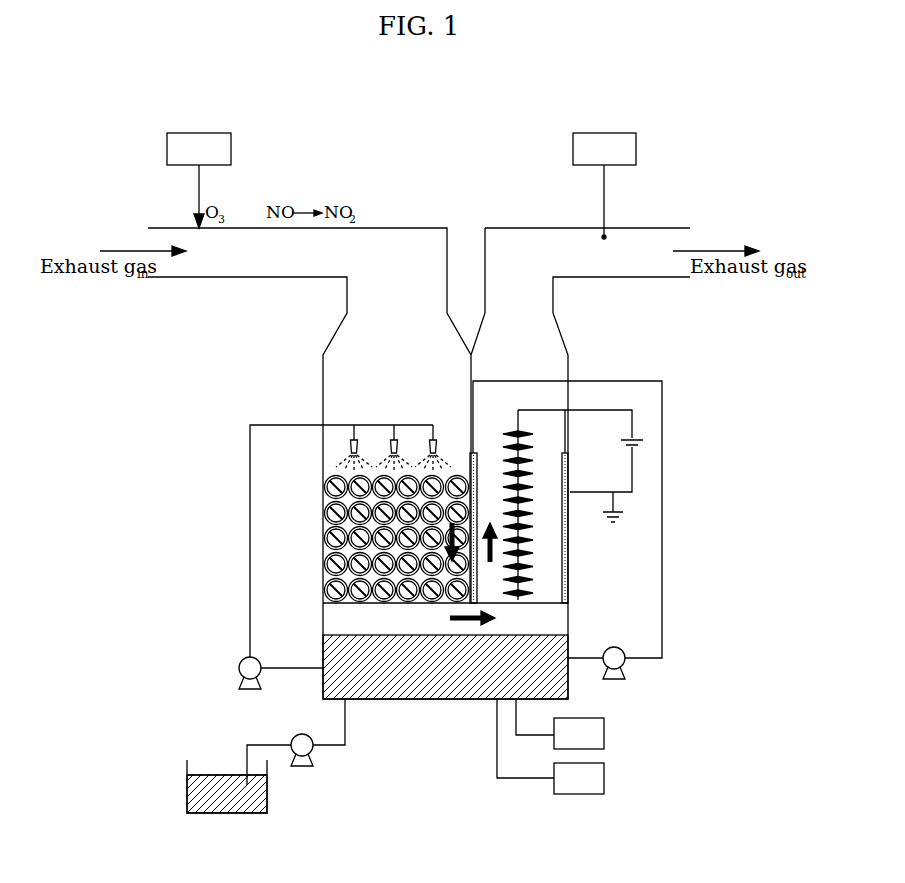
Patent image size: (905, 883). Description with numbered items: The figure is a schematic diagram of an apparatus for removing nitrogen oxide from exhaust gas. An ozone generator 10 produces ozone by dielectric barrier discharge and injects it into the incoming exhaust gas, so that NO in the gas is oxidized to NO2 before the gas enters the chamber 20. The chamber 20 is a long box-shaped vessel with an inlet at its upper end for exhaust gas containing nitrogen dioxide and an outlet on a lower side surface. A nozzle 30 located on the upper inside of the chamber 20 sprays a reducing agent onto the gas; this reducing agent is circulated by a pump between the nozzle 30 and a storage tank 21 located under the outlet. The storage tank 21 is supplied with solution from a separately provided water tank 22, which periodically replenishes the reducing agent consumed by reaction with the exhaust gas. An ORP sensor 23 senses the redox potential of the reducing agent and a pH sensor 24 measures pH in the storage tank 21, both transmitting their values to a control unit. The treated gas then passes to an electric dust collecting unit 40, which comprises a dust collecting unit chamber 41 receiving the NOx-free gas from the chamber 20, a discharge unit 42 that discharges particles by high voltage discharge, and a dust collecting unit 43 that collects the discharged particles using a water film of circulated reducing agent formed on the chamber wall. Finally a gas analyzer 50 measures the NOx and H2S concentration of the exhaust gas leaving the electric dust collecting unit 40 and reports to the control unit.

The ozone generator 10 is at (231, 148).
The gas analyzer 50 is at (636, 148).
The chamber 20 is at (323, 497).
The storage tank 21 is at (401, 699).
The water tank 22 is at (237, 805).
The ORP sensor 23 is at (604, 778).
The pH sensor 24 is at (604, 735).
The nozzle 30 is at (352, 447).
The electric dust collecting unit 40 is at (591, 514).
The dust collecting unit chamber 41 is at (568, 362).
The discharge unit 42 is at (520, 537).
The dust collecting unit 43 is at (568, 568).